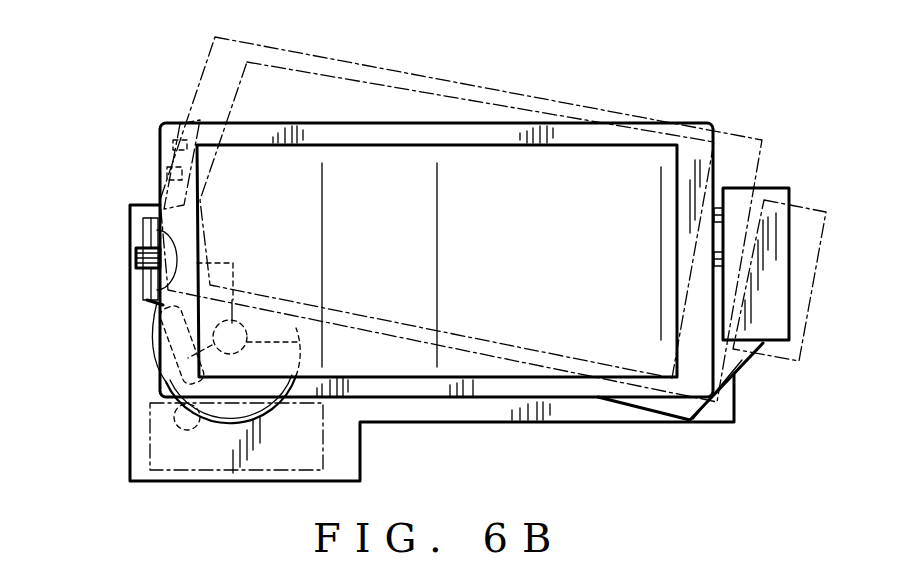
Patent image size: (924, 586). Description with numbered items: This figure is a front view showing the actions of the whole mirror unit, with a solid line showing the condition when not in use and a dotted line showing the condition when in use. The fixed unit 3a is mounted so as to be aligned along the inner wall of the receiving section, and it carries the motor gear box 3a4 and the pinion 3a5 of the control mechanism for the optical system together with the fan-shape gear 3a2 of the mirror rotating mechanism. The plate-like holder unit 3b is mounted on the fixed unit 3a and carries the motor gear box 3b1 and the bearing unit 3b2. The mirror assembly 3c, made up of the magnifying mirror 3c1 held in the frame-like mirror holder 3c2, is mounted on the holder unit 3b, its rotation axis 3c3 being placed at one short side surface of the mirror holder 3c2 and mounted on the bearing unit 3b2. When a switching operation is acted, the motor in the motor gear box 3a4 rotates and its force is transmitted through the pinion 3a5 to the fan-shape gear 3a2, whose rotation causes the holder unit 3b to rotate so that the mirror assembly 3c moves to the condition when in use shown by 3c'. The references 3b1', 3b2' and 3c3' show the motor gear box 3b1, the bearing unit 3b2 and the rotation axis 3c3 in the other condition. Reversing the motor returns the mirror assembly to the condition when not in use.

The fixed unit 3a is at (716, 413).
The fan-shape gear 3a2 is at (157, 372).
The motor gear box 3a4 is at (323, 450).
The pinion 3a5 is at (174, 418).
The holder unit 3b is at (741, 370).
The motor gear box 3b1 is at (776, 227).
The motor gear box in the other condition 3b1' is at (806, 263).
The bearing unit 3b2 is at (91, 268).
The bearing unit in the other condition 3b2' is at (147, 144).
The mirror assembly 3c is at (436, 211).
The mirror assembly in the condition when in use 3c' is at (461, 207).
The magnifying mirror 3c1 is at (558, 328).
The mirror holder 3c2 is at (614, 142).
The rotation axis 3c3 is at (108, 260).
The rotation axis in the other condition 3c3' is at (119, 155).